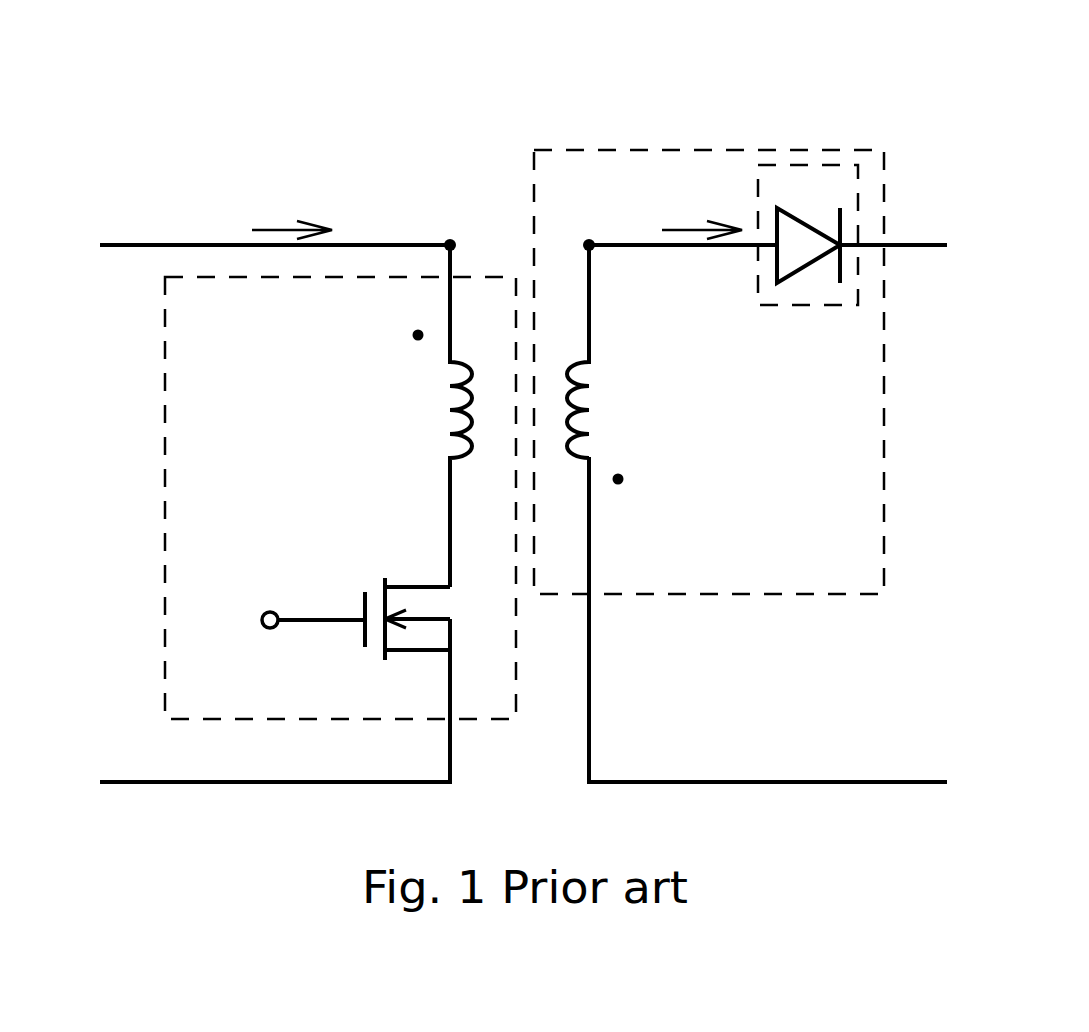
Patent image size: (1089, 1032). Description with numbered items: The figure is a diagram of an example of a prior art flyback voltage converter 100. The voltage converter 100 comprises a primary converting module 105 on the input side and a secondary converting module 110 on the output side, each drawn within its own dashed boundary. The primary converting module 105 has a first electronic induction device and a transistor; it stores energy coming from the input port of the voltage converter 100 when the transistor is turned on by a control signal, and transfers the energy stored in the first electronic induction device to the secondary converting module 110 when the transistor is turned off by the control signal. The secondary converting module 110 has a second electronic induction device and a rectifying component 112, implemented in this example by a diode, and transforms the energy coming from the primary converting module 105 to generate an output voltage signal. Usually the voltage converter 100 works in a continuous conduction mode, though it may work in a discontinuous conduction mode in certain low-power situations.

The flyback voltage converter 100 is at (893, 97).
The primary converting module 105 is at (476, 720).
The secondary converting module 110 is at (732, 594).
The rectifying component 112 is at (807, 305).